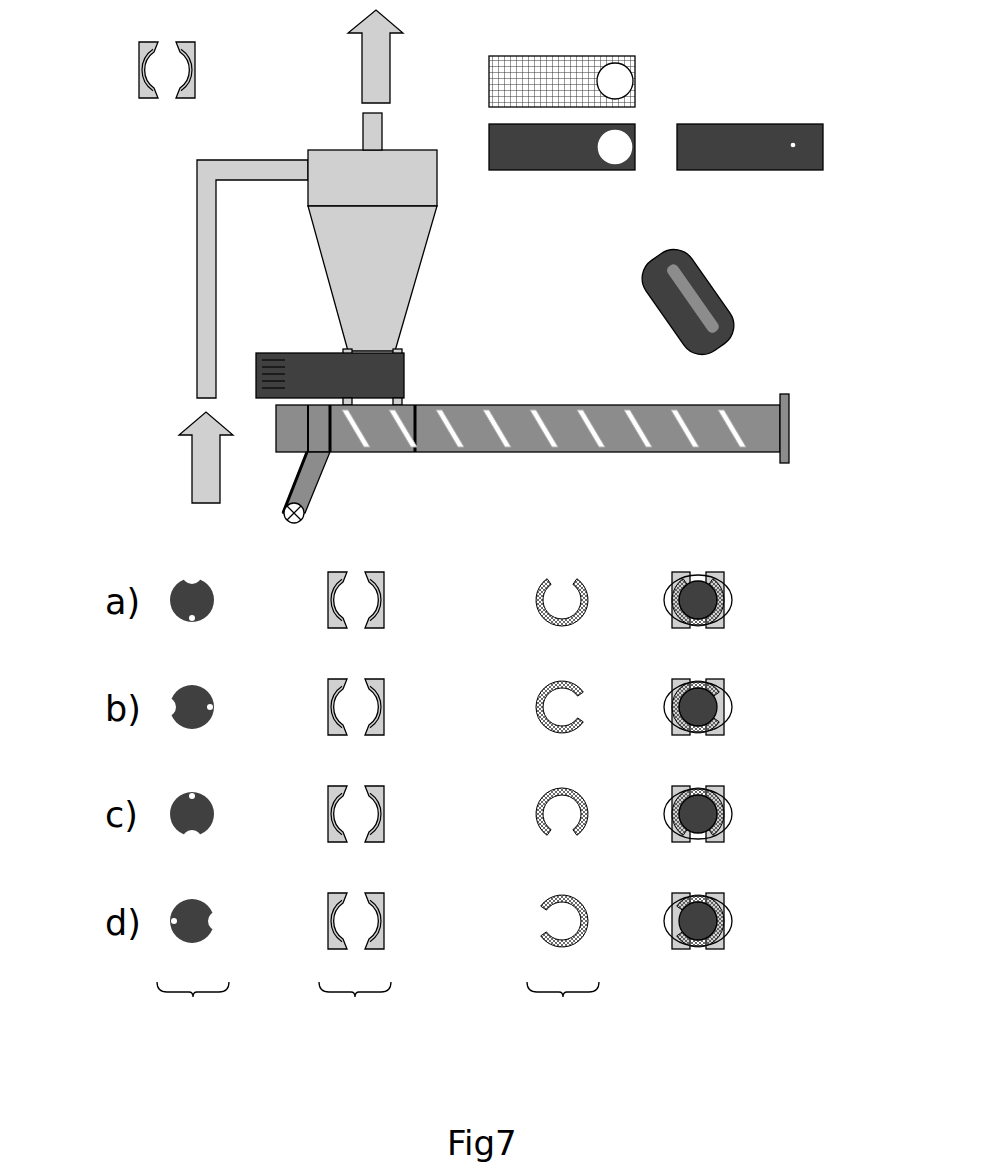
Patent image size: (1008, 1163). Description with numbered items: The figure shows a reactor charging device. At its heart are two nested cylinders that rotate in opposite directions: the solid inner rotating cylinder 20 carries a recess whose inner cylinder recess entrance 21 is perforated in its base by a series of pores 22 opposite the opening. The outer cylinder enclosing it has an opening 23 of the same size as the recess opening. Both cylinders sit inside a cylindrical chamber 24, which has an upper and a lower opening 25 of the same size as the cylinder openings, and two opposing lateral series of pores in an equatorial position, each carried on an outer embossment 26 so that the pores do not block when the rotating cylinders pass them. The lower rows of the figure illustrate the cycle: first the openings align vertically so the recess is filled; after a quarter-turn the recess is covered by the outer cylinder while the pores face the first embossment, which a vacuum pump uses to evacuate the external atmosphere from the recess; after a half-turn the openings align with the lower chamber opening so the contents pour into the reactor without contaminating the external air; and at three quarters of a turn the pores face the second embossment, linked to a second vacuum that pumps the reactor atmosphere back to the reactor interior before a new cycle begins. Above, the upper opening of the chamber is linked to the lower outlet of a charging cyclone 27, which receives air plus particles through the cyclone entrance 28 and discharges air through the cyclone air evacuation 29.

The inner rotating cylinder 20 is at (577, 173).
The inner cylinder recess entrance 21 is at (618, 148).
The pores arranged at the base of the recess of the inner cylinder 22 is at (793, 145).
The opening of the outer cylinder 23 is at (613, 82).
The cylindrical chamber 24 is at (143, 98).
The opening of the cylindrical chamber 25 is at (168, 95).
The embossment provided with pores of the cylindrical chamber 26 is at (205, 73).
The charging cyclone 27 is at (423, 263).
The cyclone entrance for air plus particles 28 is at (203, 457).
The cyclone air evacuation 29 is at (380, 72).